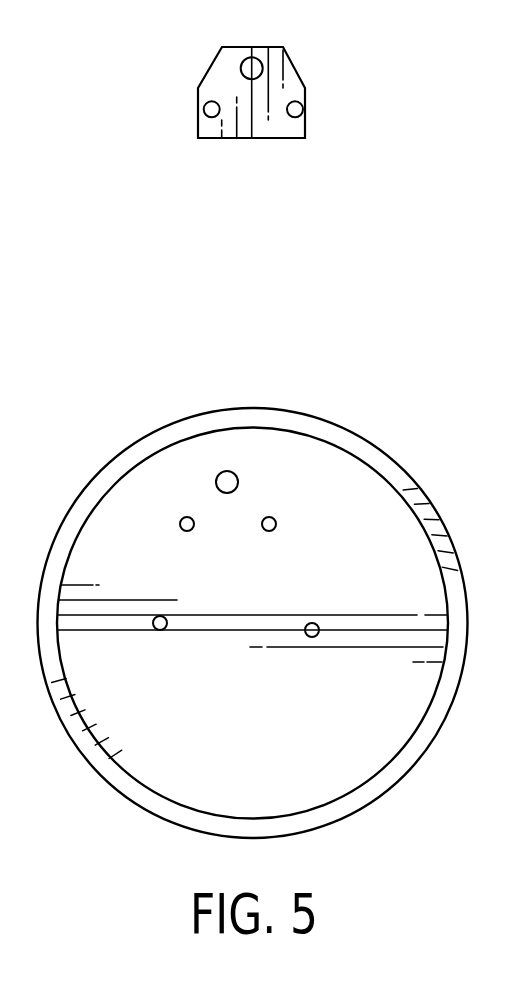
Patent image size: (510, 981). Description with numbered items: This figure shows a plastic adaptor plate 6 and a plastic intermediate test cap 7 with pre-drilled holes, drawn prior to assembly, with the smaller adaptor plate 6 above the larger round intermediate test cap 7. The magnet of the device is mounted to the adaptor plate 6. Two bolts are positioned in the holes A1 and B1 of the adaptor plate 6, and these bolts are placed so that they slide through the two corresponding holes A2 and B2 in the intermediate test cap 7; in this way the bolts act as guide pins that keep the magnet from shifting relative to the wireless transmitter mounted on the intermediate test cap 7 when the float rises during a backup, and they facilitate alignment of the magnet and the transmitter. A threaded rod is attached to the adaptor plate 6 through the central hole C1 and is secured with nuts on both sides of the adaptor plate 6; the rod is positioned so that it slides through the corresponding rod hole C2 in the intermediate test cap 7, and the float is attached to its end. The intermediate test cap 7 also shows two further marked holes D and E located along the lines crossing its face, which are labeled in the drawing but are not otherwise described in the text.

The plastic adaptor plate 6 is at (218, 71).
The hole A1 is at (209, 109).
The hole B1 is at (296, 110).
The hole C1 is at (255, 68).
The intermediate test cap 7 is at (362, 446).
The hole A2 is at (185, 523).
The hole B2 is at (271, 523).
The rod hole C2 is at (230, 481).
The left channel hole D is at (160, 630).
The right channel hole E is at (314, 636).